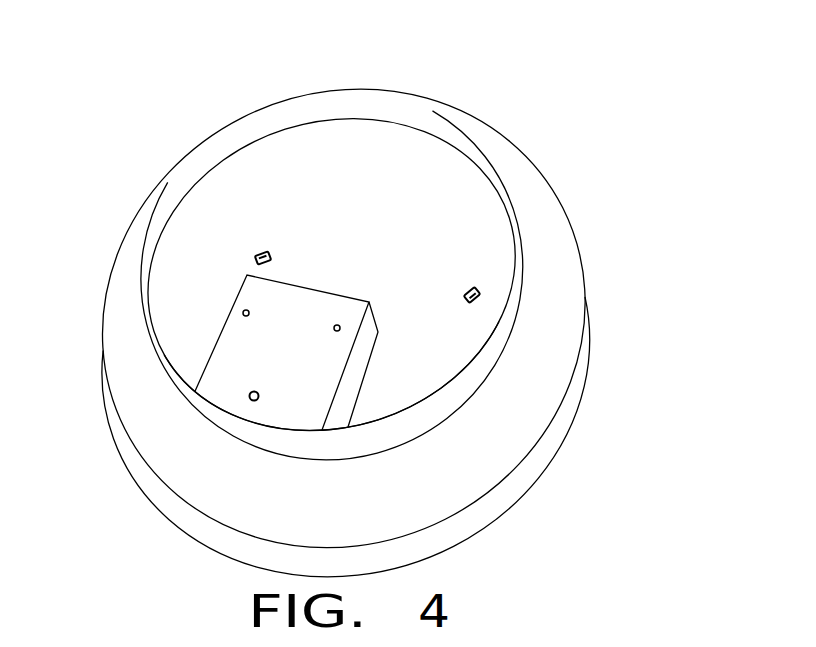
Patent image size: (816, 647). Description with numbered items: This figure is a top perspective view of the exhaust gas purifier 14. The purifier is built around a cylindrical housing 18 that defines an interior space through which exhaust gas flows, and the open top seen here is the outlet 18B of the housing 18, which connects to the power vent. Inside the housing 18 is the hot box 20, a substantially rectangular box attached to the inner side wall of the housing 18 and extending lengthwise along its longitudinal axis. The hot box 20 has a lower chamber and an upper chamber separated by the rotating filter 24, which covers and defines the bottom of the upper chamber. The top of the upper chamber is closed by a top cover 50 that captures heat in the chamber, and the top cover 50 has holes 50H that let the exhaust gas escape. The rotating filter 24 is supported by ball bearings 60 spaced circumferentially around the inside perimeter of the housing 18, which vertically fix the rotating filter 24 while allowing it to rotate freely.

The exhaust gas purifier 14 is at (198, 127).
The housing 18 is at (120, 438).
The outlet 18B is at (333, 118).
The rotating filter 24 is at (405, 278).
The top cover 50 is at (219, 309).
The holes 50H is at (249, 309).
The ball bearings 60 is at (258, 252).
The hot box 20 is at (227, 367).